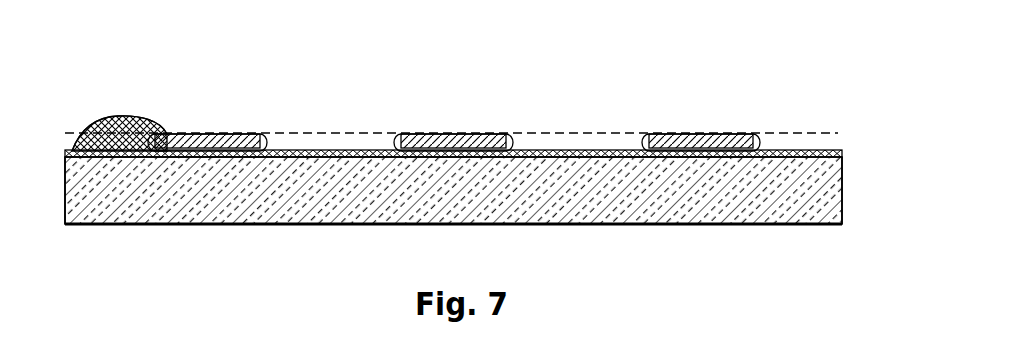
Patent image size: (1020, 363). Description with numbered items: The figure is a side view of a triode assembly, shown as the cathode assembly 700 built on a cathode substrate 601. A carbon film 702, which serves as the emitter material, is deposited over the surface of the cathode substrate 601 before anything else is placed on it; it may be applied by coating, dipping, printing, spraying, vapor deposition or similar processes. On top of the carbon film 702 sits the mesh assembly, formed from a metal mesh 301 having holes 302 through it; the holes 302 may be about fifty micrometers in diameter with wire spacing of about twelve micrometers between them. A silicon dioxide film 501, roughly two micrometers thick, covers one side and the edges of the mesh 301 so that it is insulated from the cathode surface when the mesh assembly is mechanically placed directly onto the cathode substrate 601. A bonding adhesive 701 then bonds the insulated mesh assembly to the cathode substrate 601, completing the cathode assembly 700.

The metal mesh 301 is at (453, 133).
The holes 302 is at (559, 121).
The silicon dioxide film 501 is at (393, 142).
The cathode substrate 601 is at (849, 201).
The cathode assembly 700 is at (680, 233).
The bonding adhesive 701 is at (105, 114).
The carbon film 702 is at (298, 150).